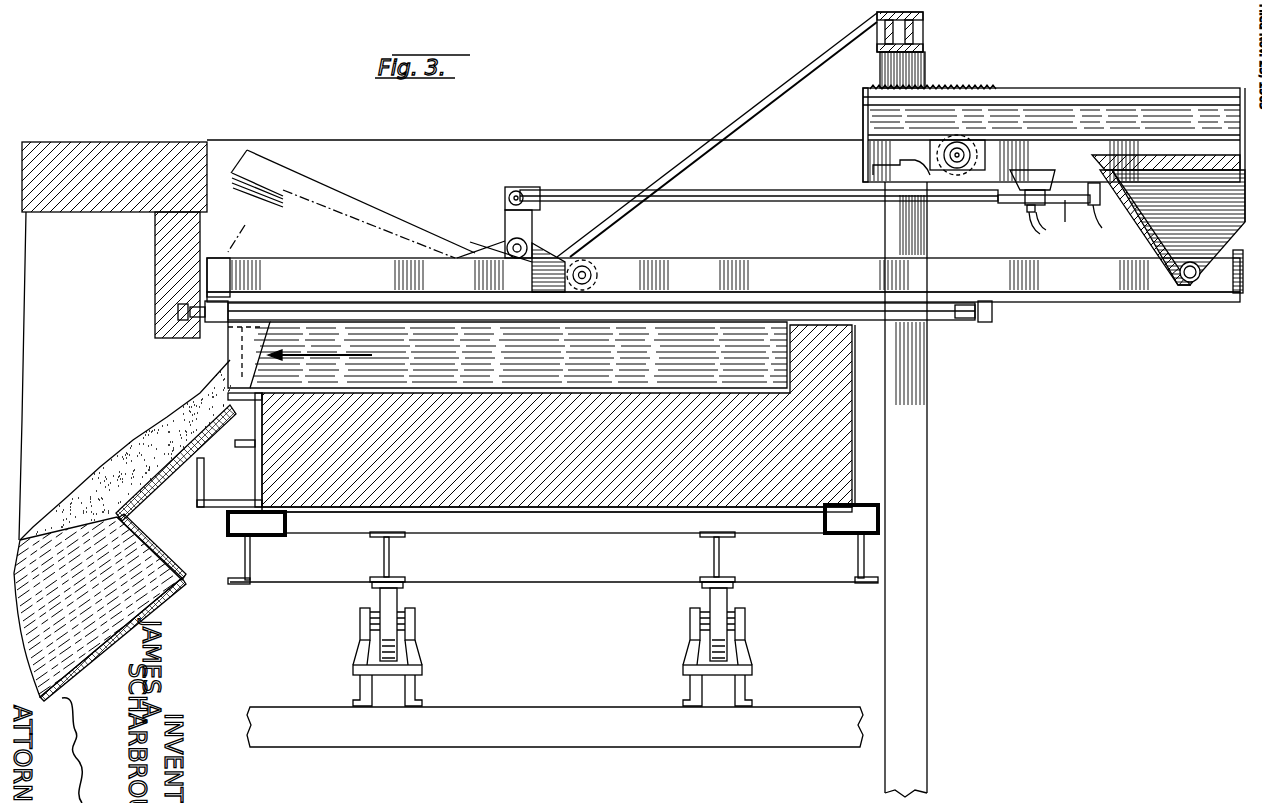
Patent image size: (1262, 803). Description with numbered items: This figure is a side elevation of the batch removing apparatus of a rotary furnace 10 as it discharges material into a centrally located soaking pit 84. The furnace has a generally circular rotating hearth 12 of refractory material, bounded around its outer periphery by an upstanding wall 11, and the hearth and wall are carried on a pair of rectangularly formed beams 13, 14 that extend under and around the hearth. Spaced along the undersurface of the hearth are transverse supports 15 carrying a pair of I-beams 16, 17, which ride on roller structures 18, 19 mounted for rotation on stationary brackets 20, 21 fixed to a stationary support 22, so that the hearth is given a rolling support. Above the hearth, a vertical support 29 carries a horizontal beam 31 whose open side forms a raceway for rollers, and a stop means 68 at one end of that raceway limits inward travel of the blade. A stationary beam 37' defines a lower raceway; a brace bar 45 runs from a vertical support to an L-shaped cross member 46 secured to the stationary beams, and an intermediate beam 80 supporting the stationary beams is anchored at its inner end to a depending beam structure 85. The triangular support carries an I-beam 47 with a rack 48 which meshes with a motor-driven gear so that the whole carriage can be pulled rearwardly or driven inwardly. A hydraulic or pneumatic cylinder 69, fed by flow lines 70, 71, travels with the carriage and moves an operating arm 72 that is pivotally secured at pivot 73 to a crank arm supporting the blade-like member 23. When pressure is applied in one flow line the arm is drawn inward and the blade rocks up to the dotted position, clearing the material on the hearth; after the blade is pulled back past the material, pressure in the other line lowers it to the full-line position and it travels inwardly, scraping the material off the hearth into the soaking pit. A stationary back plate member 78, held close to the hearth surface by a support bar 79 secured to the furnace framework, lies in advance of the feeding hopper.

The furnace 10 is at (101, 142).
The depending beam structure 85 is at (155, 315).
The intermediate beam 80 is at (233, 252).
The blade-like member 23 is at (227, 345).
The soaking pit 84 is at (66, 450).
The pivotal connection 73 is at (503, 220).
The L-shaped cross member 46 is at (557, 254).
The brace bar 45 is at (718, 131).
The operating arm 72 is at (758, 180).
The horizontal beam 31 is at (855, 145).
The stop means 68 is at (925, 165).
The rack 48 is at (960, 88).
The I-beam 47 is at (1210, 105).
The flow line 70 is at (1030, 226).
The hydraulic or pneumatic cylinder 69 is at (1066, 222).
The flow line 71 is at (1097, 224).
The stationary beam 37' is at (725, 283).
The support bar 79 is at (945, 320).
The stationary back plate member 78 is at (580, 363).
The upstanding wall 11 is at (848, 350).
The vertical support 29 is at (928, 462).
The hearth 12 is at (550, 490).
The rectangularly formed beam 14 is at (230, 522).
The I-beam 17 is at (383, 558).
The transverse support 15 is at (588, 533).
The I-beam 16 is at (722, 558).
The rectangularly formed beam 13 is at (858, 545).
The roller structure 19 is at (380, 640).
The stationary bracket 21 is at (420, 672).
The roller structure 18 is at (740, 645).
The stationary bracket 20 is at (752, 675).
The stationary support 22 is at (540, 740).